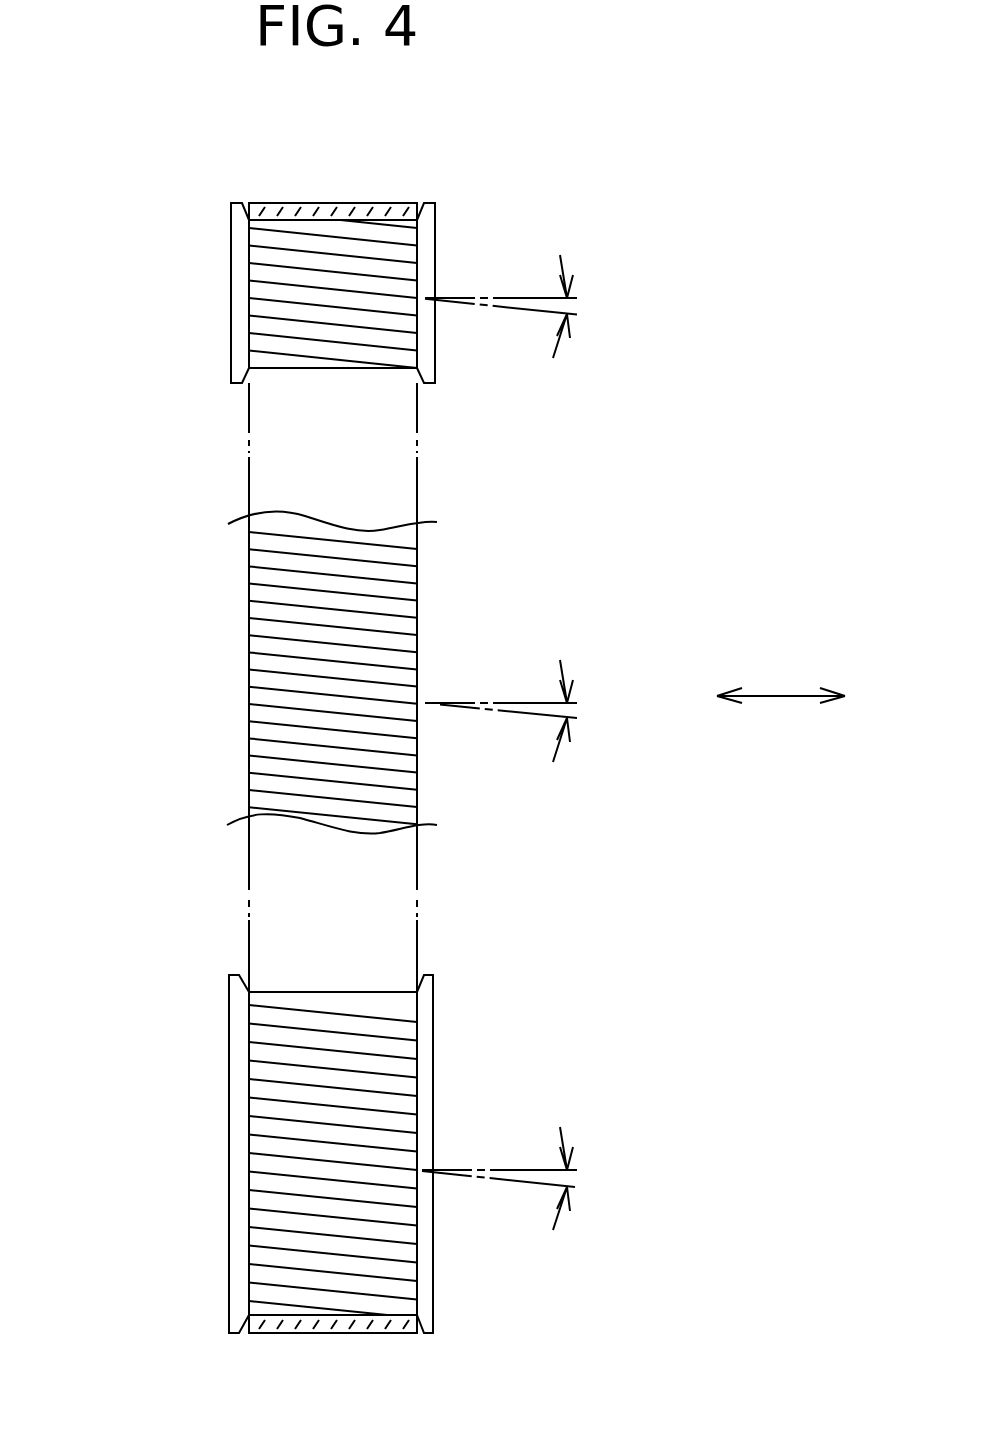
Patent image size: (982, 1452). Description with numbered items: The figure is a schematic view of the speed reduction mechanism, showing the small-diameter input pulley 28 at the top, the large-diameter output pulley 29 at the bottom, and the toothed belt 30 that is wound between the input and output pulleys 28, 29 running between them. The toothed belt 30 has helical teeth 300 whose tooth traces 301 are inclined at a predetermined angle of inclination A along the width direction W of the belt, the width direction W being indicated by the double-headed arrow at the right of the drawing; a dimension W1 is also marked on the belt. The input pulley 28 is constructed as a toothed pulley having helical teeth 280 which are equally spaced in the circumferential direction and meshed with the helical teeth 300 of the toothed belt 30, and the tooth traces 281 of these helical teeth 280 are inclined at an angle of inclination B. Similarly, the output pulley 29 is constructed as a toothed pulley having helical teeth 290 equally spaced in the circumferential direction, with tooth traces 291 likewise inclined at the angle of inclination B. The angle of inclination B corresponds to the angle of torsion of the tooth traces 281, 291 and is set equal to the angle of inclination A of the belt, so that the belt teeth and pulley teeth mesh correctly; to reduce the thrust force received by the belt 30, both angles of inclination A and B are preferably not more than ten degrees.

The input pulley 28 is at (324, 260).
The helical teeth 280 is at (257, 357).
The tooth traces 281 is at (297, 250).
The output pulley 29 is at (323, 1129).
The helical teeth 290 is at (255, 1281).
The tooth traces 291 is at (297, 1158).
The toothed belt 30 is at (315, 661).
The helical teeth 300 is at (257, 778).
The tooth traces 301 is at (297, 657).
The angle of inclination A is at (521, 711).
The angle of inclination B is at (520, 742).
The wire diameter W1 is at (488, 702).
The width direction W is at (782, 695).